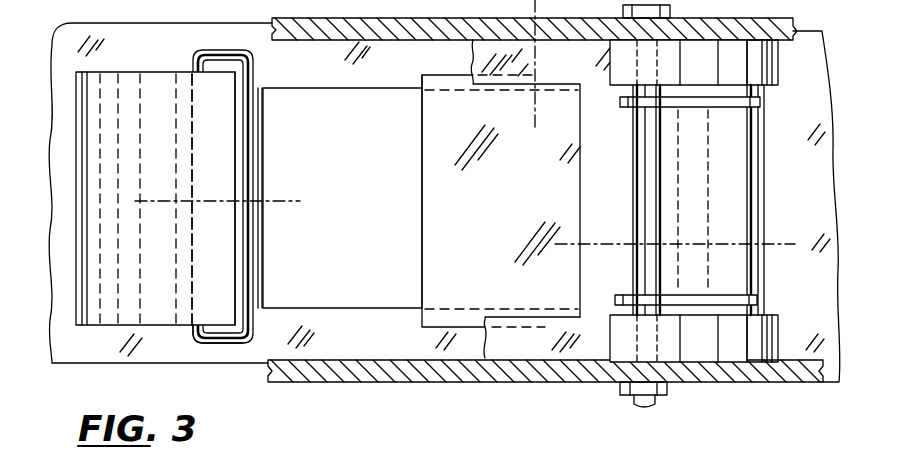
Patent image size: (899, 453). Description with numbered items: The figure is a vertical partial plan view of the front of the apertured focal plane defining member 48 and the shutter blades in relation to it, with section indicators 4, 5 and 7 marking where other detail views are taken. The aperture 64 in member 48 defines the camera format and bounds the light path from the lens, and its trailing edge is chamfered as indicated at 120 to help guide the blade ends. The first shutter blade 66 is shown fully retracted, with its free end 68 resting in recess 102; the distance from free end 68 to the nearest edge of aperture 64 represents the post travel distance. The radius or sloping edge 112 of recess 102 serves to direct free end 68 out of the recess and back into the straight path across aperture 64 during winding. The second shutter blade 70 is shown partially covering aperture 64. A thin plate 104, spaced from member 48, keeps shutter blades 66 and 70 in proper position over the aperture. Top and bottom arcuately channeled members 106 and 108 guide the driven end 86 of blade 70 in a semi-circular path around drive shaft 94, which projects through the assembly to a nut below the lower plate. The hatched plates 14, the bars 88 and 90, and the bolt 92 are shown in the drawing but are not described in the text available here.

The plate 14 is at (790, 32).
The member 48 is at (384, 346).
The aperture 64 is at (368, 90).
The first shutter blade 66 is at (222, 154).
The free end 68 is at (240, 172).
The second shutter blade 70 is at (497, 206).
The driven end 86 is at (765, 149).
The upper bar 88 is at (762, 100).
The lower bar 90 is at (755, 290).
The bolt 92 is at (632, 223).
The drive shaft 94 is at (643, 405).
The recess 102 is at (208, 332).
The thin plate 104 is at (538, 356).
The top arcuately channeled member 106 is at (722, 74).
The bottom arcuately channeled member 108 is at (722, 354).
The sloping edge 112 is at (252, 283).
The chamfer 120 is at (256, 151).
The section line 4- 4 is at (526, 12).
The section line 5- 5 is at (155, 211).
The section line 7- 7 is at (569, 236).